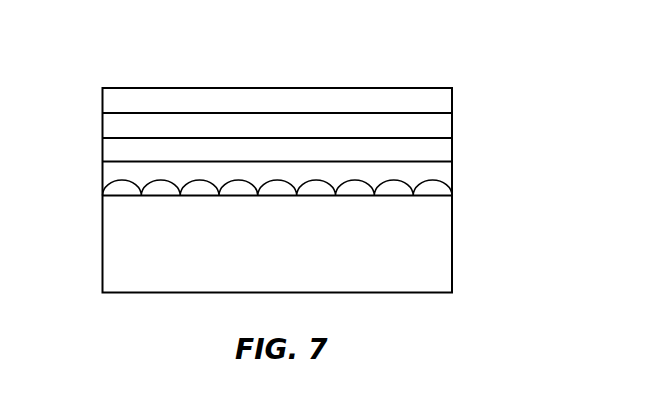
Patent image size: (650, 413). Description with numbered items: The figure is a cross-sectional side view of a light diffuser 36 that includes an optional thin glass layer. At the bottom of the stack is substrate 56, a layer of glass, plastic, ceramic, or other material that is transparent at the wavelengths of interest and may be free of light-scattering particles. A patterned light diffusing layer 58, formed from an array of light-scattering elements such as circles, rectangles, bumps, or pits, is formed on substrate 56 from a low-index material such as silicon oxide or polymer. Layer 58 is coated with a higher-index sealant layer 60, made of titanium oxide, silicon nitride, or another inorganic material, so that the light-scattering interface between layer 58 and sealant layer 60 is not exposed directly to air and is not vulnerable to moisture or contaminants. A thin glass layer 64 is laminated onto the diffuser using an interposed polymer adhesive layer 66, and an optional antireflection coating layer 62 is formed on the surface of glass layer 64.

The light diffuser 36 is at (492, 100).
The substrate 56 is at (116, 246).
The patterned light diffusing layer 58 is at (120, 181).
The sealant layer 60 is at (222, 173).
The antireflection coating layer 62 is at (117, 105).
The glass layer 64 is at (117, 128).
The adhesive layer 66 is at (117, 151).